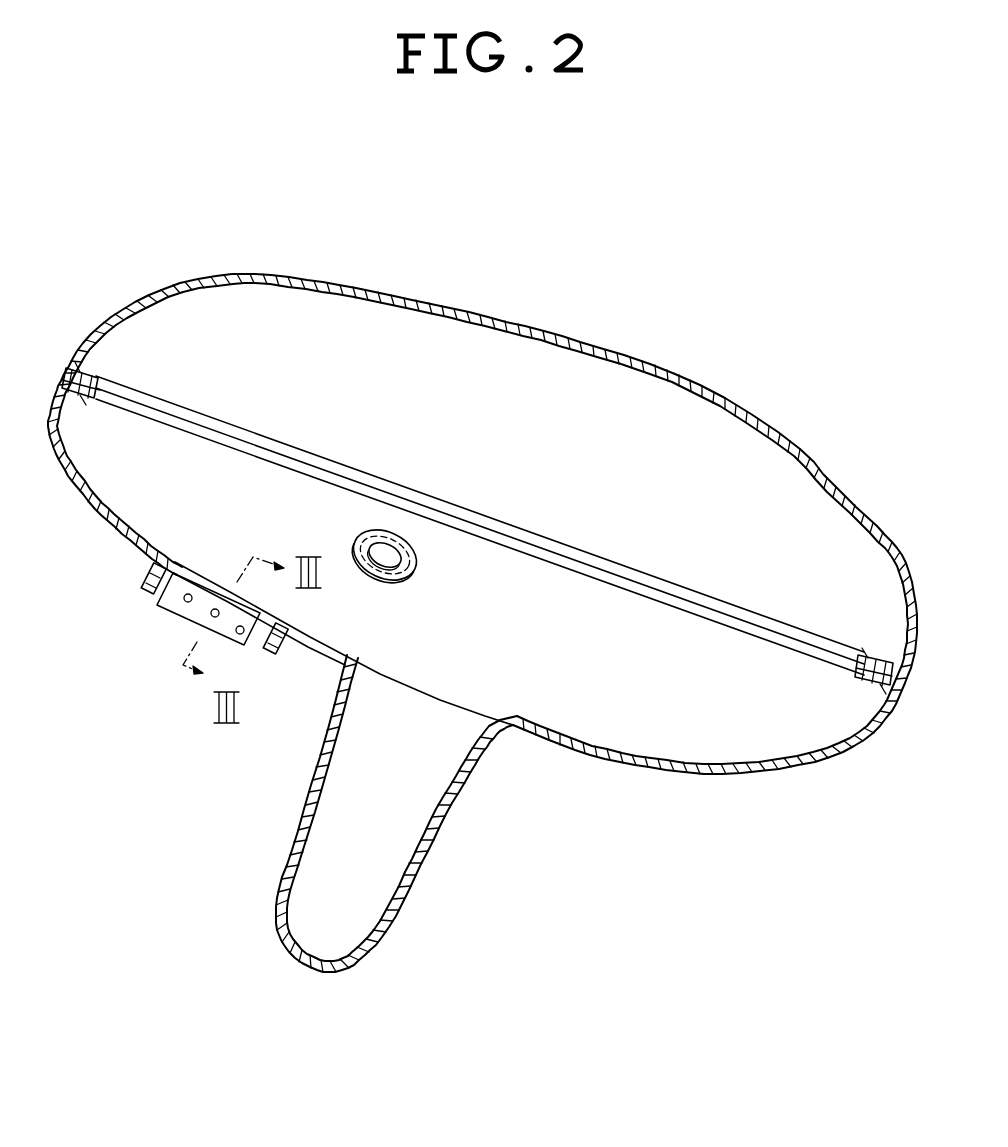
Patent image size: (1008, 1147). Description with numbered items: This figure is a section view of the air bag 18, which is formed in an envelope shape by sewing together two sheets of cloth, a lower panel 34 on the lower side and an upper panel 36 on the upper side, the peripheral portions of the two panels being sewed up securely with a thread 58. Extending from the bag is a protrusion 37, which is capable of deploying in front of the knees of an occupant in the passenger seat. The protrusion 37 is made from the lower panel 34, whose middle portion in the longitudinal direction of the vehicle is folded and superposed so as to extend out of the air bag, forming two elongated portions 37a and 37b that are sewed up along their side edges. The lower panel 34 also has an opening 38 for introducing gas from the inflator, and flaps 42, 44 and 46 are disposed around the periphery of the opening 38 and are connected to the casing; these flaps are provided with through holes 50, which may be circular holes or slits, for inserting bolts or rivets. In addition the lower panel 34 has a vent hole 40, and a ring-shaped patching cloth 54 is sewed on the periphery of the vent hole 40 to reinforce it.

The air bag 18 is at (482, 546).
The lower panel 34 is at (795, 772).
The upper panel 36 is at (538, 322).
The protrusion 37 is at (376, 813).
The elongated portion 37a is at (297, 823).
The elongated portion 37b is at (462, 803).
The opening 38 is at (270, 551).
The vent hole 40 is at (430, 518).
The flap 42 is at (143, 573).
The flap 44 is at (183, 617).
The flap 46 is at (280, 656).
The through hole 50 is at (243, 627).
The patching cloth 54 is at (418, 558).
The thread 58 is at (84, 363).